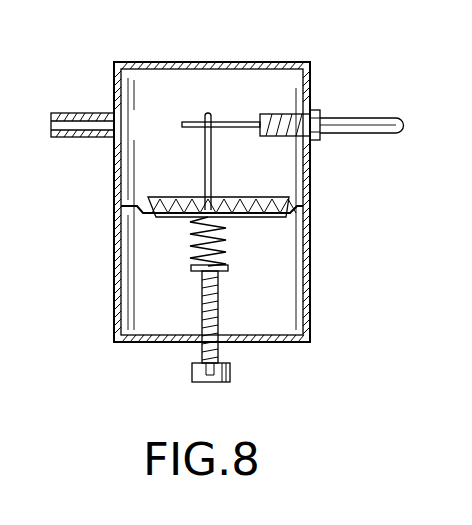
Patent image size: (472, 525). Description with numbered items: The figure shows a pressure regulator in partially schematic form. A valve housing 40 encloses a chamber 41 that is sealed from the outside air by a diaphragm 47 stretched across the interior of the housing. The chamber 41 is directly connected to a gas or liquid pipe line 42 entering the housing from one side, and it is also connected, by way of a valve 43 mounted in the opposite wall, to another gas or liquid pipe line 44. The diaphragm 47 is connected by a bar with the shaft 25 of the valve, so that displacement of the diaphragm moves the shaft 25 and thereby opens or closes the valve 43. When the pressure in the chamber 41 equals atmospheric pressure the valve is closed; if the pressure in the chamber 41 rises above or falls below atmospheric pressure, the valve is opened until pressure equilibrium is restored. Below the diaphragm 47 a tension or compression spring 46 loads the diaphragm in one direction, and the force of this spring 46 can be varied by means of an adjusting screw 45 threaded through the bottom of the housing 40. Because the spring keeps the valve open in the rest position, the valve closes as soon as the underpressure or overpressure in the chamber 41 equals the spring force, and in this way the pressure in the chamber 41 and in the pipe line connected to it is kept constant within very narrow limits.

The shaft 25 is at (243, 120).
The valve housing 40 is at (311, 300).
The chamber 41 is at (186, 88).
The gas or liquid pipe line 42 is at (76, 112).
The valve 43 is at (313, 115).
The gas or liquid pipe line 44 is at (355, 122).
The adjusting screw 45 is at (232, 372).
The spring 46 is at (228, 256).
The diaphragm 47 is at (240, 197).